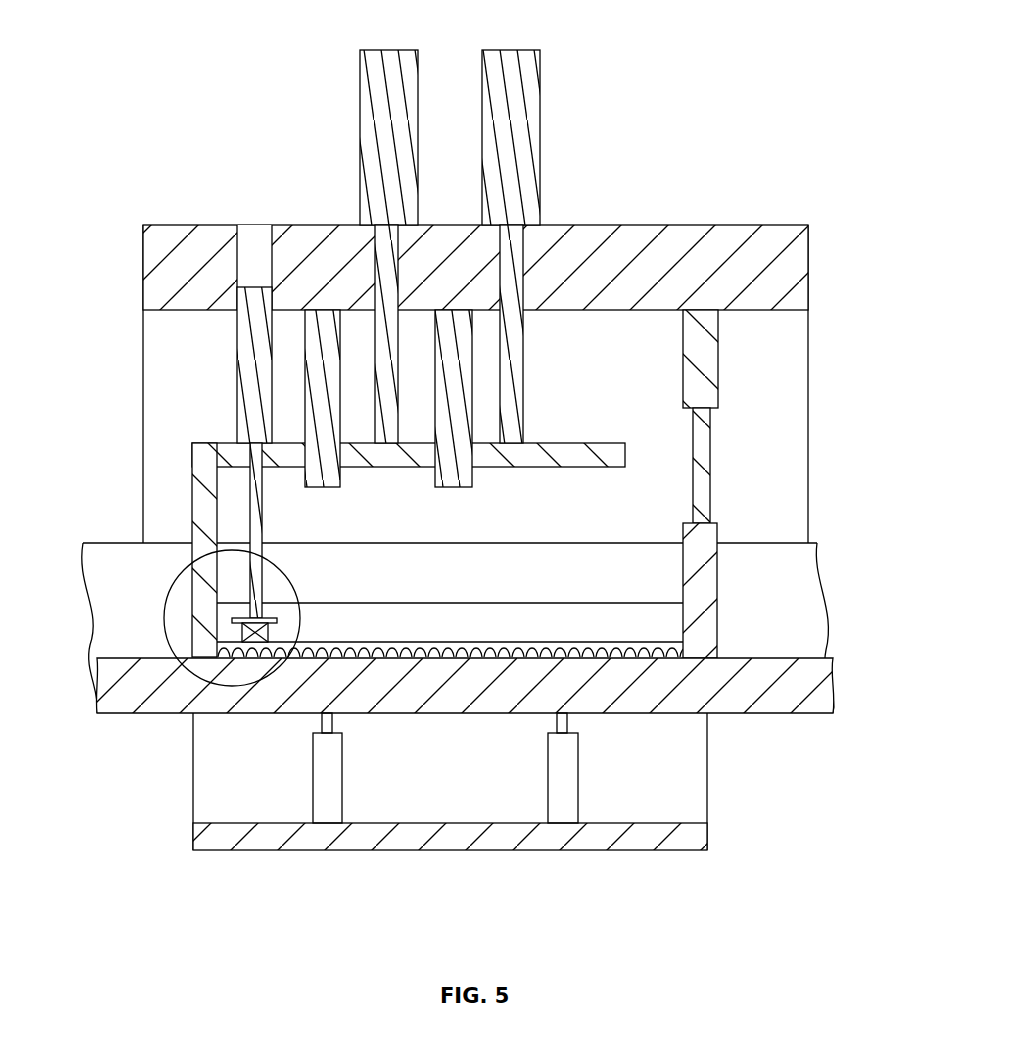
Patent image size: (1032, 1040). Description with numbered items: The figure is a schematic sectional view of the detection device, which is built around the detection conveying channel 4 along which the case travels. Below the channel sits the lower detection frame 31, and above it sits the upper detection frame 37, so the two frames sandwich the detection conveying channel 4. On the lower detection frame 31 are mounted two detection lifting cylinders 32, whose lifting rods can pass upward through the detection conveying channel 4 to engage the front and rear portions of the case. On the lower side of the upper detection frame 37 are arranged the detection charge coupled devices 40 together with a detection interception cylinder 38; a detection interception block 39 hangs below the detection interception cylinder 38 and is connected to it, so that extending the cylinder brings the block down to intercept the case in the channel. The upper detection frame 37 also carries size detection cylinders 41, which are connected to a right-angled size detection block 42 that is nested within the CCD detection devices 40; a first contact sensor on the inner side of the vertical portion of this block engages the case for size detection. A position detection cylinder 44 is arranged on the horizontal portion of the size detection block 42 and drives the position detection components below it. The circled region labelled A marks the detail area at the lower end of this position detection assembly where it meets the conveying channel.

The detection conveying channel 4 is at (800, 688).
The lower detection frame 31 is at (635, 835).
The detection lifting cylinder 32 is at (333, 772).
The upper detection frame 37 is at (665, 250).
The detection interception cylinder 38 is at (700, 390).
The detection interception block 39 is at (700, 597).
The detection charge coupled device 40 is at (330, 330).
The size detection cylinder 41 is at (515, 140).
The right-angled size detection block 42 is at (210, 553).
The position detection cylinder 44 is at (243, 308).
The detail region A is at (200, 675).